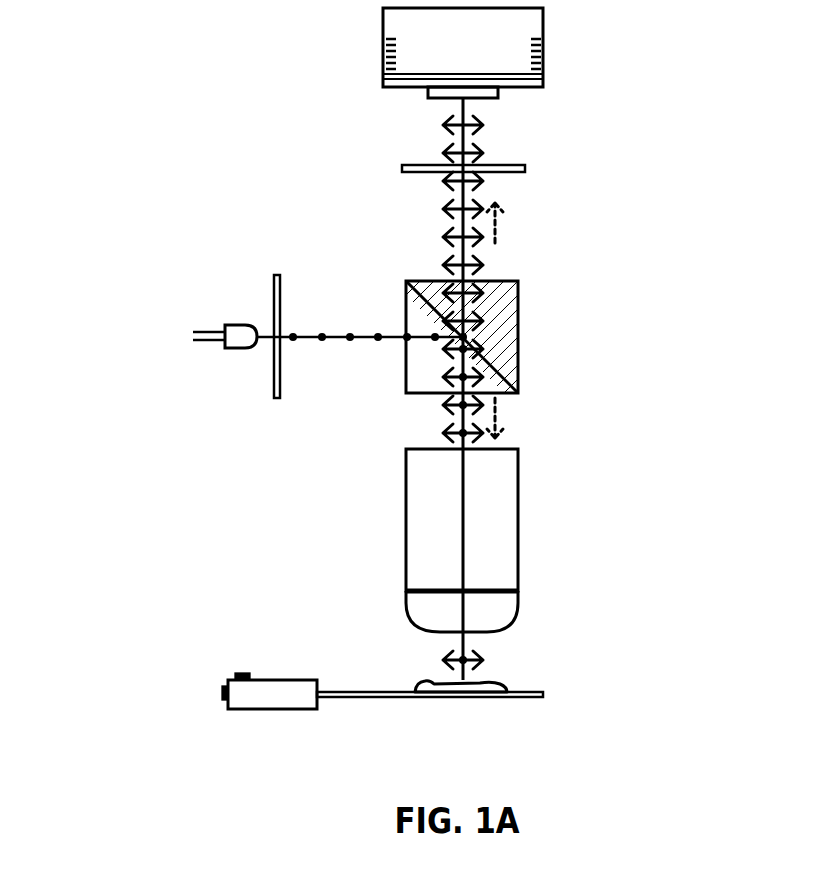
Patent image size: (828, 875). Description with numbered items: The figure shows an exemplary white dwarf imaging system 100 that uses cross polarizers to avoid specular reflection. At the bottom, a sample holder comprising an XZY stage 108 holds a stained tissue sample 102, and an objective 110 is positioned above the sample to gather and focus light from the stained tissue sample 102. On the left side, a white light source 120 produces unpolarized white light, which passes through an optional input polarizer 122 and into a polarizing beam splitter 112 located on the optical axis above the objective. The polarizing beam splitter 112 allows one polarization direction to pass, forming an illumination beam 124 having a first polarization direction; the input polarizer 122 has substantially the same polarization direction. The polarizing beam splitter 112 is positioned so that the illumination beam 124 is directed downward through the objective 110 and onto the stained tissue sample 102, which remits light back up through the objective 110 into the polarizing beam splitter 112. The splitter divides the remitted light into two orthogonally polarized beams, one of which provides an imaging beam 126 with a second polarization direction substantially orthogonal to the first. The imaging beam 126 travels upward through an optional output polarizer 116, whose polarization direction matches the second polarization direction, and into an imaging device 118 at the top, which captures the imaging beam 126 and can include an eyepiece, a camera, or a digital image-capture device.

The imaging system 100 is at (204, 141).
The imaging device 118 is at (463, 52).
The output polarizer 116 is at (533, 173).
The imaging beam 126 is at (513, 223).
The polarizing beam splitter 112 is at (539, 337).
The illumination beam 124 is at (513, 418).
The input polarizer 122 is at (285, 296).
The white light source 120 is at (165, 335).
The objective 110 is at (524, 540).
The stained tissue sample 102 is at (493, 680).
The XZY stage 108 is at (382, 725).